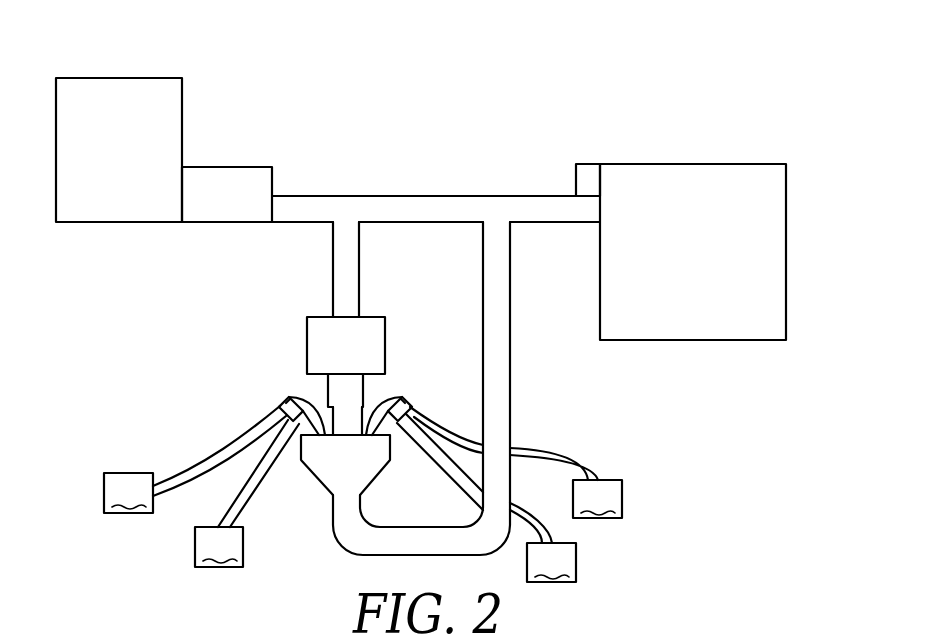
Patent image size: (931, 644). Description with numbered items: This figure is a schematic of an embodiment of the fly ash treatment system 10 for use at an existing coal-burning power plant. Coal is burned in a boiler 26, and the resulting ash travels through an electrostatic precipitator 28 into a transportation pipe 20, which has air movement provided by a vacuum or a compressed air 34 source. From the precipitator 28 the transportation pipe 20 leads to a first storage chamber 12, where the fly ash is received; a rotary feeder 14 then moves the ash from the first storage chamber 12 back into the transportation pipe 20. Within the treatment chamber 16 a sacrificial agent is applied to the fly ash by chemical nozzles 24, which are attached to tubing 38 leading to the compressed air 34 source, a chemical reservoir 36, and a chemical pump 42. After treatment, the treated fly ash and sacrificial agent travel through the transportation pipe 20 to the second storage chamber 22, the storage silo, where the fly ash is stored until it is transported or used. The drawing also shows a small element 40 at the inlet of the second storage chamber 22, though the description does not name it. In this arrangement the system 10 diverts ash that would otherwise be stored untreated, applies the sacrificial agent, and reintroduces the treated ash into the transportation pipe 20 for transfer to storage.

The system 10 is at (502, 68).
The first storage chamber 12 is at (313, 325).
The rotary feeder 14 is at (338, 392).
The treatment chamber 16 is at (330, 470).
The transportation pipe 20 is at (310, 205).
The second storage chamber 22 is at (767, 218).
The chemical nozzles 24 is at (287, 397).
The boiler 26 is at (167, 103).
The electrostatic precipitator 28 is at (222, 175).
The compressed air source 34 is at (385, 554).
The chemical reservoir 36 is at (363, 495).
The tubing 38 is at (193, 475).
The tank outlet / fill fitting 40 is at (592, 173).
The chemical pump 42 is at (278, 405).